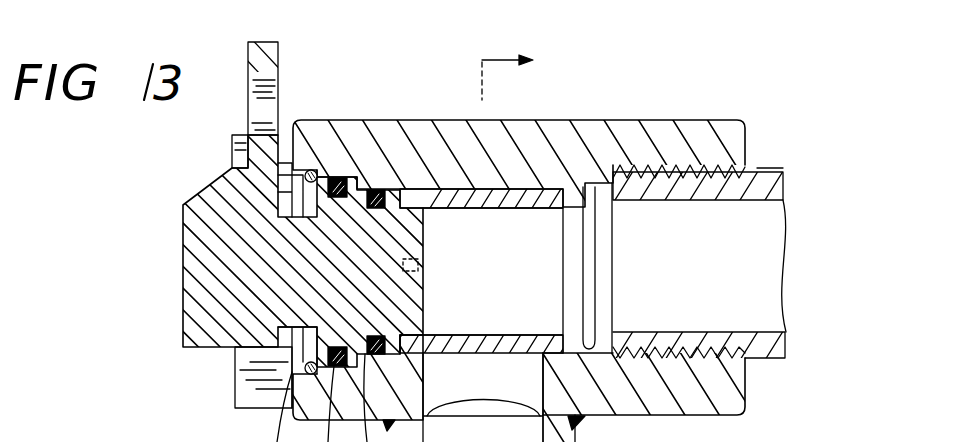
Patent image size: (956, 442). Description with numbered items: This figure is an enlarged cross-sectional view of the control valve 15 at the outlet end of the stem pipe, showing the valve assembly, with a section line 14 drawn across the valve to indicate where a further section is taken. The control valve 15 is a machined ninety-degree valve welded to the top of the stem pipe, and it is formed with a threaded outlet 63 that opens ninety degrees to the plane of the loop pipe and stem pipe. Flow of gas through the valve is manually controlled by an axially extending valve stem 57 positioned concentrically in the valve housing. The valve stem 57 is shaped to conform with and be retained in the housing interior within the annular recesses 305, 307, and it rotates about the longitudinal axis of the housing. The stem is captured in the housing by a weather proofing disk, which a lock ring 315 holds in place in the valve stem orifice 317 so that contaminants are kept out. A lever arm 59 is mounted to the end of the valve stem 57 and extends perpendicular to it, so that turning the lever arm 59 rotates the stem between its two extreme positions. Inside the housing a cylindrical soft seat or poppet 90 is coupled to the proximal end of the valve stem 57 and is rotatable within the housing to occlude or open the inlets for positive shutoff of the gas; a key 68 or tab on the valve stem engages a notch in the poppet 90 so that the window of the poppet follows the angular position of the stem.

The section line for FIG. 14 is at (532, 73).
The control valve 15 is at (667, 115).
The valve stem 57 is at (181, 268).
The lever arm 59 is at (281, 50).
The threaded outlet 63 is at (784, 171).
The key 68 is at (424, 262).
The soft seat or poppet 90 is at (499, 337).
The annular recess 305 is at (346, 182).
The annular recess 307 is at (379, 190).
The lock ring 315 is at (313, 170).
The valve stem orifice 317 is at (280, 350).